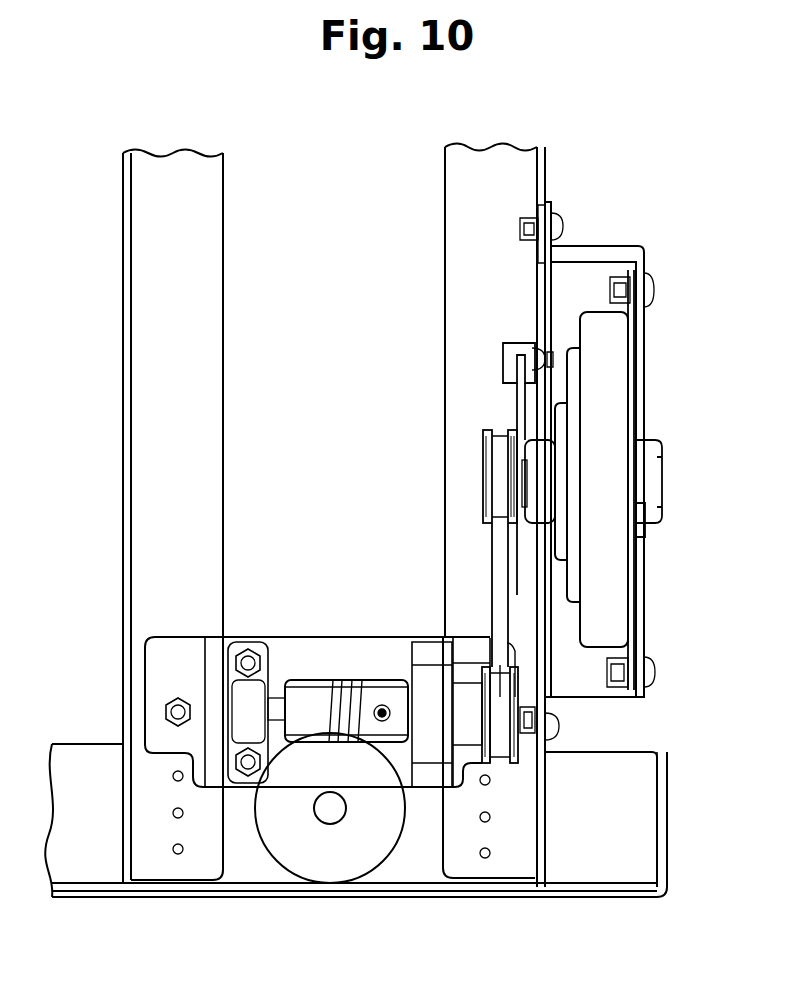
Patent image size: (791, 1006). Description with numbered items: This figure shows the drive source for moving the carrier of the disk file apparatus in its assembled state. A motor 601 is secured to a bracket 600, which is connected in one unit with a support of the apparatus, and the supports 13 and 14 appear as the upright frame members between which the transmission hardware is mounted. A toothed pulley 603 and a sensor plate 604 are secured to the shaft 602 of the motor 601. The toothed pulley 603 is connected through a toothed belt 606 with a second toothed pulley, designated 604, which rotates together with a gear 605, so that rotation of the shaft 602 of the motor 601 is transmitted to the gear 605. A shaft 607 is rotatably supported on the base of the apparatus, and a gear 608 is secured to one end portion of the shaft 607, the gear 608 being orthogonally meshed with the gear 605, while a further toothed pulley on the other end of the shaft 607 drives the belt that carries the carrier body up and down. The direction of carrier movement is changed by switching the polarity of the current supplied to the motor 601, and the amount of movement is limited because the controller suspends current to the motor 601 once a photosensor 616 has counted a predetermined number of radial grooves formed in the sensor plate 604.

The support 13 is at (517, 180).
The support 14 is at (208, 218).
The bracket 600 is at (590, 253).
The motor 601 is at (605, 485).
The shaft 602 is at (527, 477).
The toothed pulley 603 is at (483, 468).
The sensor plate 604 is at (517, 405).
The gear 605 is at (312, 700).
The toothed belt 606 is at (493, 545).
The shaft 607 is at (335, 815).
The gear 608 is at (290, 858).
The photosensor 616 is at (503, 348).